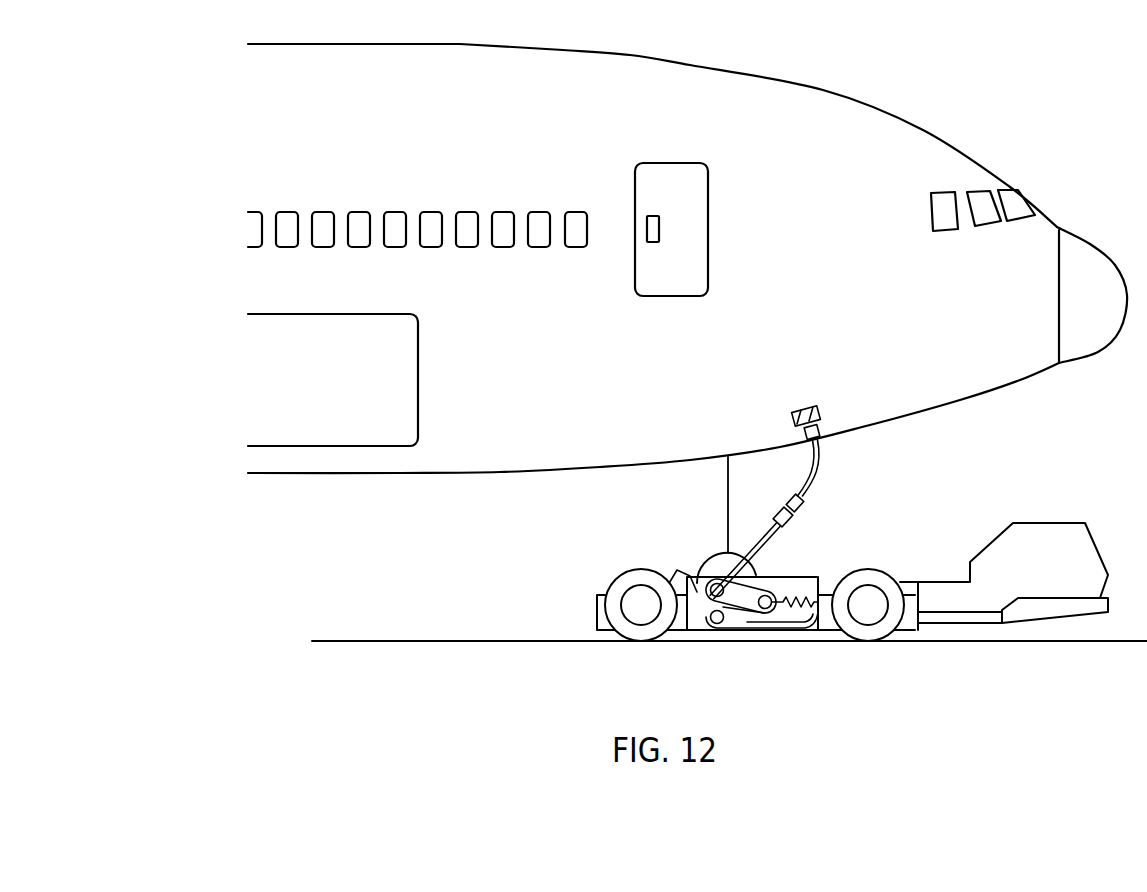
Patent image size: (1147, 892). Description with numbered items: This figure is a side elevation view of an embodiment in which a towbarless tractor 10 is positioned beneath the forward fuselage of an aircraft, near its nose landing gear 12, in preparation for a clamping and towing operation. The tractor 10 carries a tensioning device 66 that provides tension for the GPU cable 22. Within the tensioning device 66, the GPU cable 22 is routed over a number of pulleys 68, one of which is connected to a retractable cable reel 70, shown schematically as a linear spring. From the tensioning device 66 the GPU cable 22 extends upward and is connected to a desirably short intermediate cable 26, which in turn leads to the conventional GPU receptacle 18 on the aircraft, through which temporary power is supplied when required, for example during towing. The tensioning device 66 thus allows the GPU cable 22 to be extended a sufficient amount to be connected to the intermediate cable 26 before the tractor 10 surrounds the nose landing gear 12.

The towbarless tractor 10 is at (1071, 499).
The nose landing gear 12 is at (712, 551).
The GPU receptacle 18 is at (818, 412).
The GPU cable 22 is at (757, 542).
The intermediate cable 26 is at (822, 462).
The tensioning device 66 is at (808, 638).
The pulleys 68 is at (752, 586).
The retractable cable reel 70 is at (800, 592).